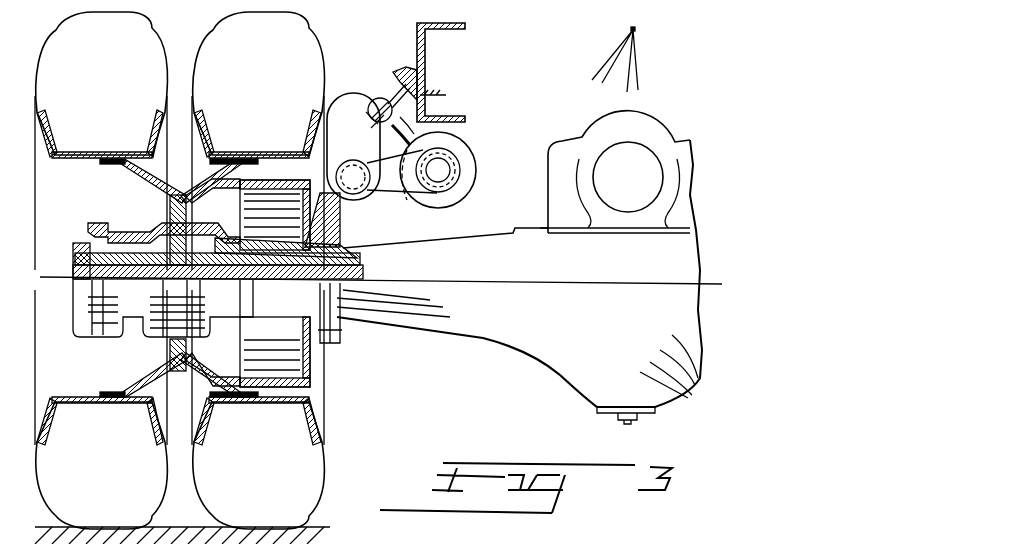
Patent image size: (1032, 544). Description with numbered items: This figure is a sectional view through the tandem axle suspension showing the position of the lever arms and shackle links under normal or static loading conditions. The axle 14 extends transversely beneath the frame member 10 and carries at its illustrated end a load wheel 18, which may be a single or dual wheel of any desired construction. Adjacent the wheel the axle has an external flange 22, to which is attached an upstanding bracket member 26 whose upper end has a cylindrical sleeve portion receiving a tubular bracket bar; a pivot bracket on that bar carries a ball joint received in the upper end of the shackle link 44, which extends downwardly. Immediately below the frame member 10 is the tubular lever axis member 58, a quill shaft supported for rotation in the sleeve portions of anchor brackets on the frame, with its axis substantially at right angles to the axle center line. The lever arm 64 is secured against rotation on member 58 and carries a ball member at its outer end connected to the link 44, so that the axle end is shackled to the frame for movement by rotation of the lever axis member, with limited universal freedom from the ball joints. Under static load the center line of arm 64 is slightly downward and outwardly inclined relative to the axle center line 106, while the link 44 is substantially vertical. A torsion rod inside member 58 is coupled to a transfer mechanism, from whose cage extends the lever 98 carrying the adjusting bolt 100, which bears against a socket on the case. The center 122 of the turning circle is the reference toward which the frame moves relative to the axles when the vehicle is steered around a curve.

The frame member 10 is at (455, 30).
The axle 14 is at (477, 236).
The load wheel 18 is at (205, 38).
The external flange 22 is at (340, 343).
The bracket member 26 is at (343, 212).
The shackle link 44 is at (352, 103).
The lever axis member 58 is at (472, 175).
The lever arm 64 is at (402, 183).
The lever 98 is at (410, 131).
The bolt 100 is at (395, 95).
The axle center line 106 is at (652, 288).
The center of turning circle 122 is at (634, 30).